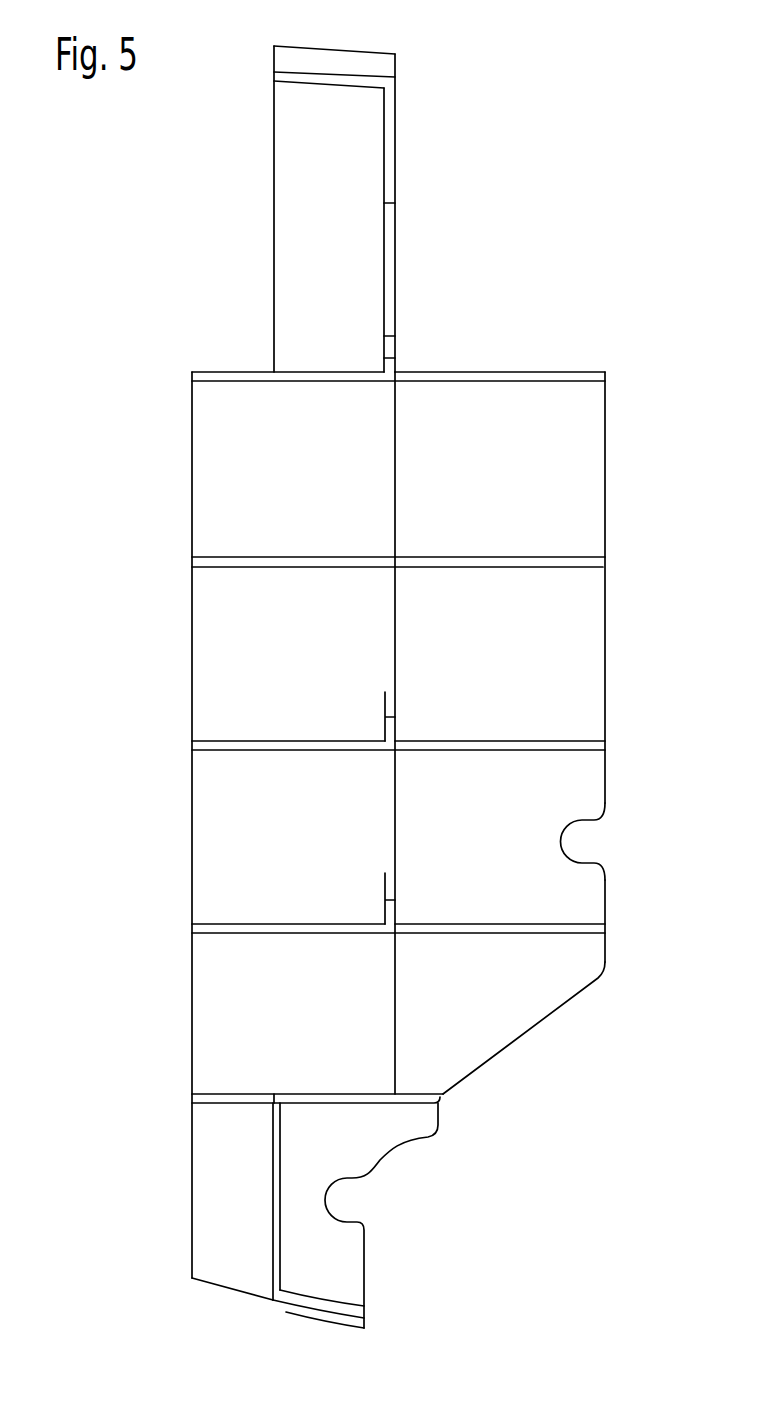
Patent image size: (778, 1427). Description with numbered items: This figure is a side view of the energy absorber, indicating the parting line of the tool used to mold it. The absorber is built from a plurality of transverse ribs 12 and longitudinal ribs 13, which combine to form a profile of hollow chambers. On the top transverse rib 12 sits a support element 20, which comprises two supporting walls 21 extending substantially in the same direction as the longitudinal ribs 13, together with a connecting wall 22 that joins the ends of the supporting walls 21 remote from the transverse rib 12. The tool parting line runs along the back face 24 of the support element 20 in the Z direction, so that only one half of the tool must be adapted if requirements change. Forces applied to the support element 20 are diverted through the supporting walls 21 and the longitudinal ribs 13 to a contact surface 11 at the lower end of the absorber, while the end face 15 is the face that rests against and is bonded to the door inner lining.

The contact surface 11 is at (297, 1313).
The transverse ribs 12 is at (500, 373).
The longitudinal ribs 13 is at (203, 662).
The end face 15 is at (568, 495).
The support element 20 is at (357, 197).
The supporting walls 21 is at (295, 243).
The connecting wall 22 is at (383, 64).
The back face 24 is at (396, 228).